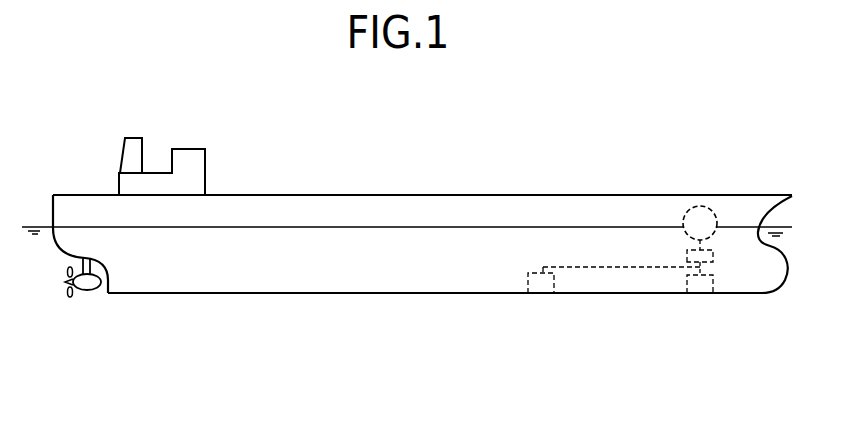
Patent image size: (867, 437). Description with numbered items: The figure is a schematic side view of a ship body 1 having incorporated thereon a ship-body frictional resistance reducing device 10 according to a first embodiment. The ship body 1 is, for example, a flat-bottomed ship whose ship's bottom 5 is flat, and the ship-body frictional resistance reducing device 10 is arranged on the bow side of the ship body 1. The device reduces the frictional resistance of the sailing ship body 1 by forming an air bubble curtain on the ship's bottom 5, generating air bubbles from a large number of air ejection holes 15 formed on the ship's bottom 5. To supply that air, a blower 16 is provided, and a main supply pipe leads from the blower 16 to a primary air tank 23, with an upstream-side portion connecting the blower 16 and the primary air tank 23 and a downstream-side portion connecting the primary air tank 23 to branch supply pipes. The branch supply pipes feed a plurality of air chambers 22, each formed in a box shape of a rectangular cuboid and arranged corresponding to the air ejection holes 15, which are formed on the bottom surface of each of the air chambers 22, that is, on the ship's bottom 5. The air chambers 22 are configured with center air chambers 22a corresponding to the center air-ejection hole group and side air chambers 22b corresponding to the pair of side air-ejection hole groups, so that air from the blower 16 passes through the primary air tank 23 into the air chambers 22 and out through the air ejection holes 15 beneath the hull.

The ship body 1 is at (356, 194).
The ship's bottom 5 is at (230, 296).
The ship-body frictional resistance reducing device 10 is at (648, 285).
The air ejection holes 15 is at (542, 294).
The blower 16 is at (709, 206).
The air chambers 22 is at (623, 345).
The center air chambers 22a is at (658, 321).
The side air chambers 22b is at (556, 283).
The primary air tank 23 is at (687, 255).